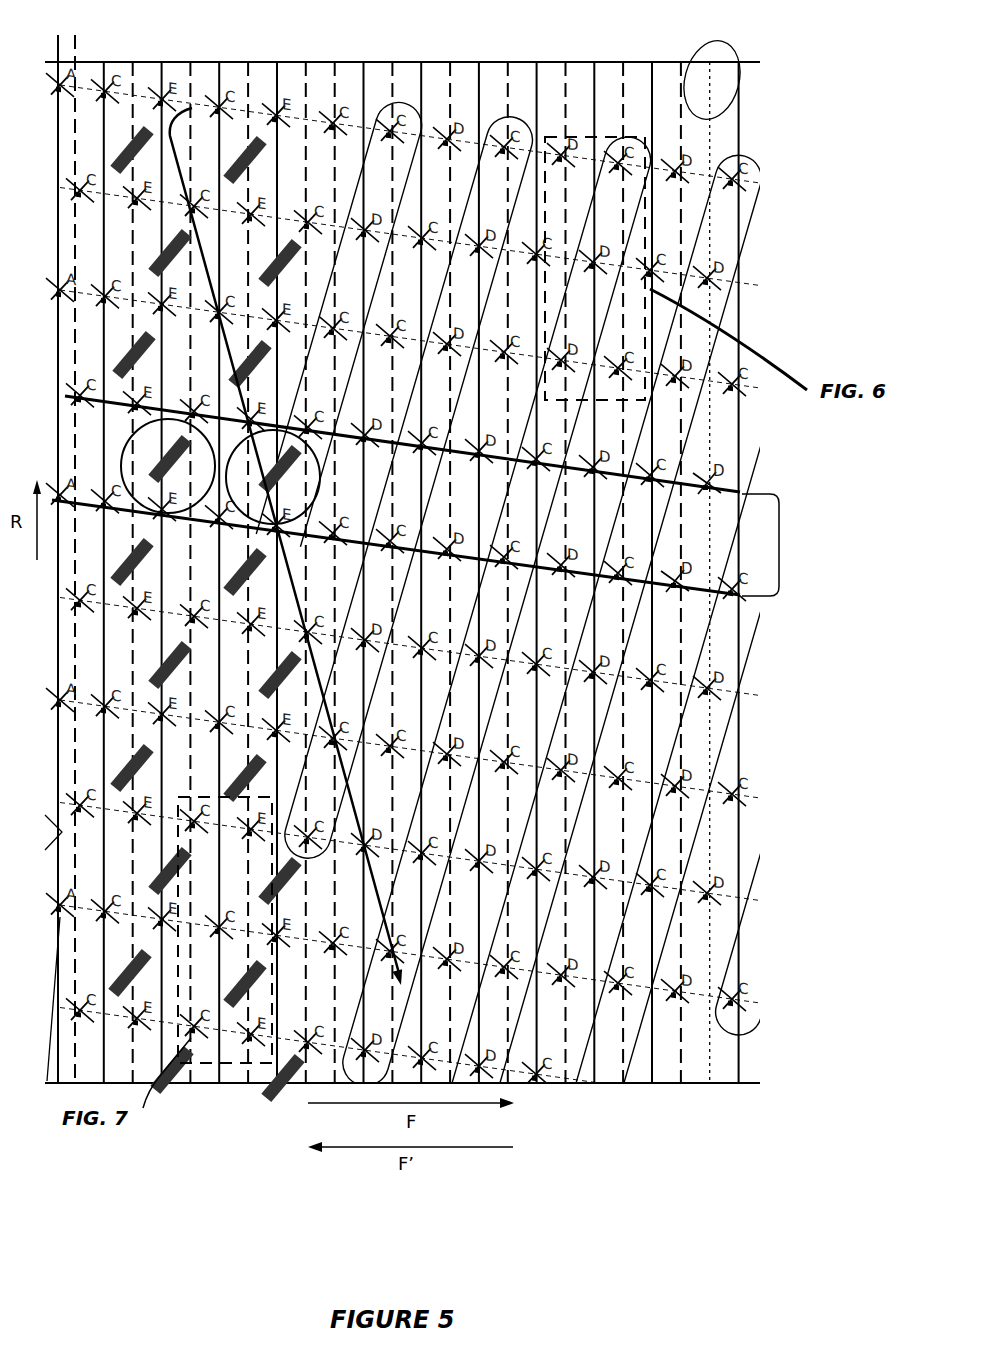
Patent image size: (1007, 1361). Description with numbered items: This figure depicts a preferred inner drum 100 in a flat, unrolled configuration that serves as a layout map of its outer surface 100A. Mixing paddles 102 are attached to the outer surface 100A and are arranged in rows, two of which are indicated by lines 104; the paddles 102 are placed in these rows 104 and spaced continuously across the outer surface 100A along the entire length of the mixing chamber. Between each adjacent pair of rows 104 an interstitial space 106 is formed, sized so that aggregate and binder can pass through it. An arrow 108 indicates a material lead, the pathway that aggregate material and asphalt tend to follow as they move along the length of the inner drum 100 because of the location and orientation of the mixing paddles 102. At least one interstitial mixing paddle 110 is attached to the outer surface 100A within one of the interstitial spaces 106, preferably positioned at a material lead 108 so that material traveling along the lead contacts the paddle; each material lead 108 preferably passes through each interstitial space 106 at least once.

The inner drum 100 is at (512, 32).
The outer surface of the inner drum 100A is at (572, 110).
The mixing paddles 102 is at (80, 392).
The rows 104 is at (690, 487).
The interstitial space 106 is at (779, 551).
The material lead 108 is at (286, 534).
The interstitial mixing paddle 110 is at (230, 428).